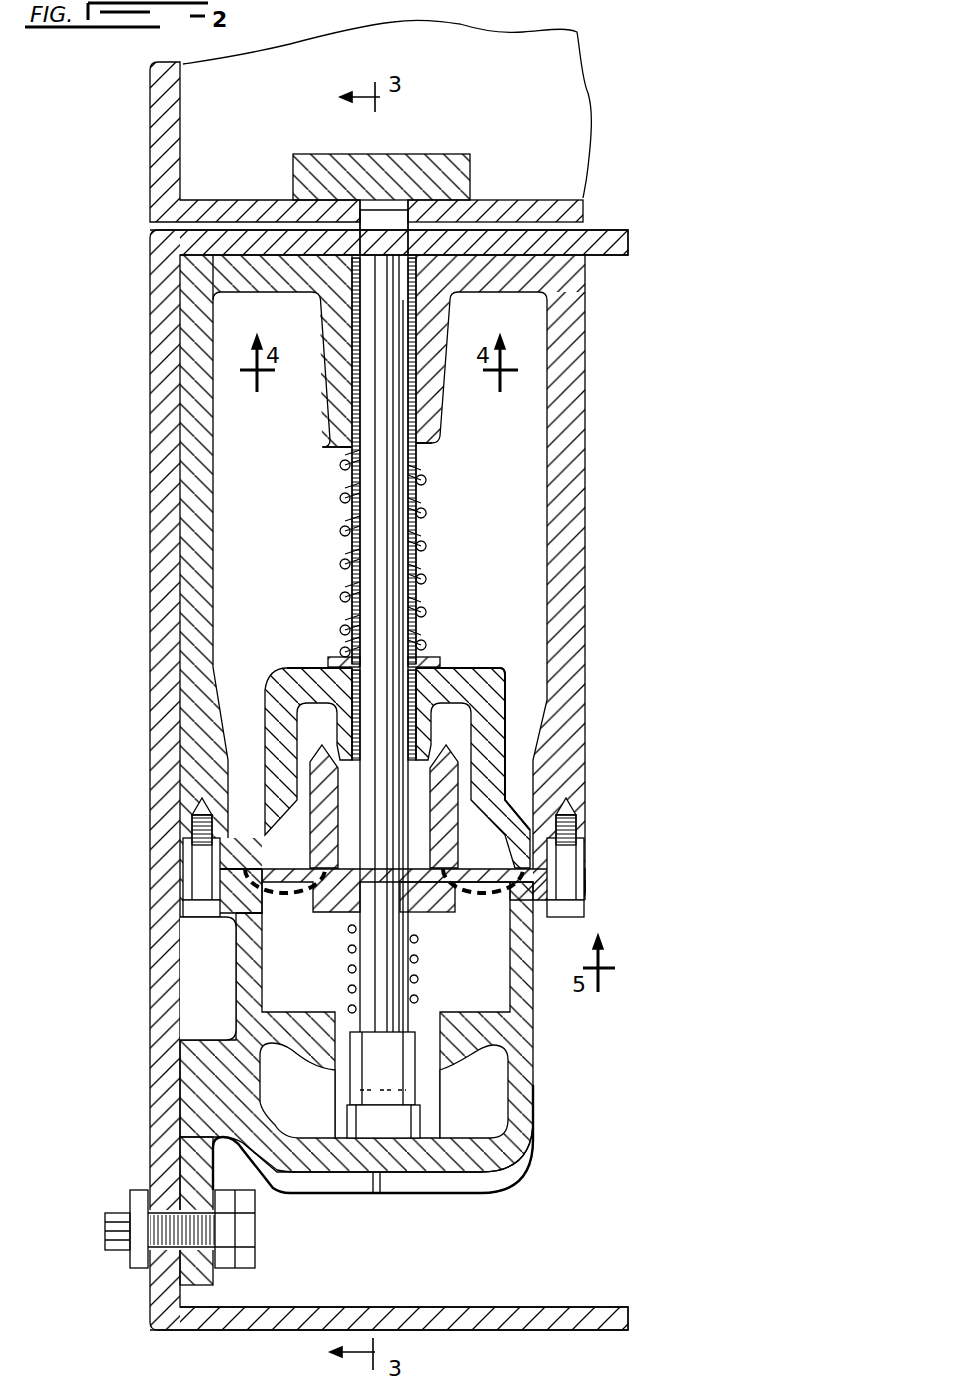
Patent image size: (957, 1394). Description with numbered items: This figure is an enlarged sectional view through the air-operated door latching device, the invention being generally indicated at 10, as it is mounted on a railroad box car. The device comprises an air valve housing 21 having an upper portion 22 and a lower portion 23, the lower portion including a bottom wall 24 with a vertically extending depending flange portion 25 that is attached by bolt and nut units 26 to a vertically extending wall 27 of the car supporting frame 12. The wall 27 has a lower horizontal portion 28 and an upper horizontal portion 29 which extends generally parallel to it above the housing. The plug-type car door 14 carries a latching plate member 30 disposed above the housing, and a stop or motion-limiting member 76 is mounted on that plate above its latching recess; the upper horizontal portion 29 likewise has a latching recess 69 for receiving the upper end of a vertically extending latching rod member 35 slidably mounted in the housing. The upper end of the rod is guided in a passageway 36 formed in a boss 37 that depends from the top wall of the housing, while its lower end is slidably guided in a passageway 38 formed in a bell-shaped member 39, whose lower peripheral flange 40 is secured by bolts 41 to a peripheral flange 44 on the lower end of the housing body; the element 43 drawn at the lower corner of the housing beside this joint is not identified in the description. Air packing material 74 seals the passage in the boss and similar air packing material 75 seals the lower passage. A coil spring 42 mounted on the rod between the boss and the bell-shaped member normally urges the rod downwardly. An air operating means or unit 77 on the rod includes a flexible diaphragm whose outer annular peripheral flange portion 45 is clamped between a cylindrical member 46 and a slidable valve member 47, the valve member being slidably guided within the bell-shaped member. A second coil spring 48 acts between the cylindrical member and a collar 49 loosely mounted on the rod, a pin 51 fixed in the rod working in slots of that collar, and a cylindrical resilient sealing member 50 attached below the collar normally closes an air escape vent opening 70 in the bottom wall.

The invention 10 is at (533, 1135).
The supporting frame 12 is at (150, 1046).
The car door 14 is at (572, 113).
The air valve housing 21 is at (585, 640).
The upper portion 22 is at (575, 484).
The lower portion 23 is at (533, 1080).
The bottom wall 24 is at (465, 1165).
The depending flange portion 25 is at (190, 1168).
The bolt and nut units 26 is at (255, 1232).
The vertically extending wall 27 is at (150, 1290).
The lower horizontal portion 28 is at (540, 1307).
The upper horizontal portion 29 is at (620, 243).
The latching plate member 30 is at (563, 198).
The latching rod member 35 is at (380, 538).
The passageway 36 is at (352, 378).
The boss 37 is at (440, 425).
The passageway 38 is at (490, 292).
The bell-shaped member 39 is at (505, 690).
The peripheral flange 40 is at (588, 885).
The bolts 41 is at (190, 888).
The coil spring 42 is at (430, 548).
The shoulder 43 is at (533, 905).
The peripheral flange 44 is at (585, 896).
The outer annular peripheral flange portion 45 is at (320, 912).
The cylindrical member 46 is at (435, 905).
The slidable valve member 47 is at (325, 830).
The coil spring 48 is at (420, 988).
The collar 49 is at (395, 1072).
The sealing member 50 is at (394, 1135).
The pin 51 is at (400, 1090).
The latching recess 69 is at (362, 208).
The air escape vent opening 70 is at (376, 1195).
The air packing material 74 is at (352, 446).
The air packing material 75 is at (325, 665).
The stop or motion-limiting member 76 is at (395, 160).
The air operating means or unit 77 is at (483, 892).